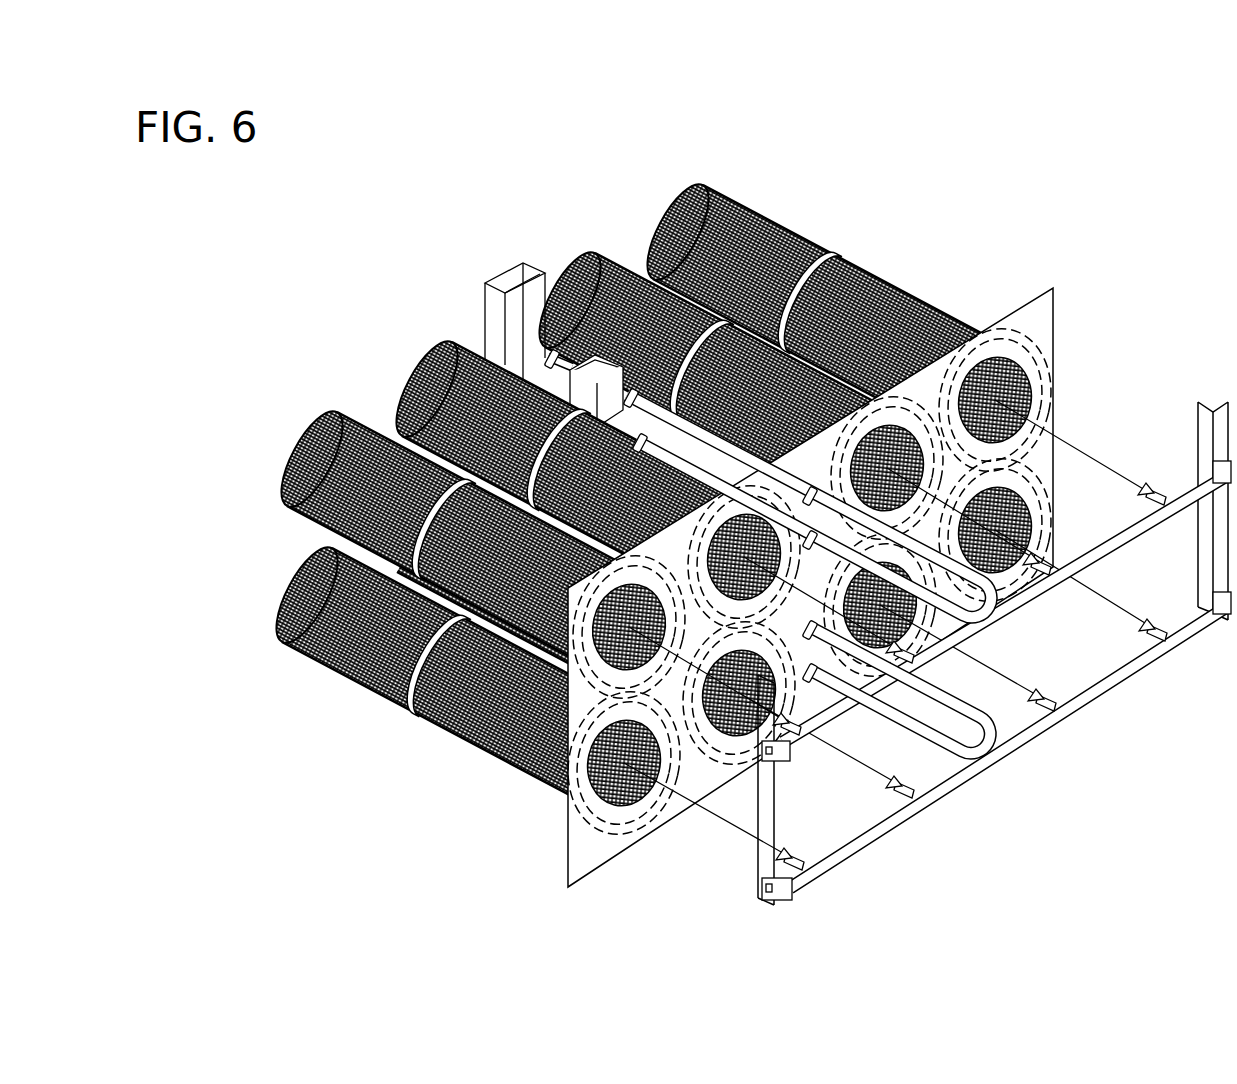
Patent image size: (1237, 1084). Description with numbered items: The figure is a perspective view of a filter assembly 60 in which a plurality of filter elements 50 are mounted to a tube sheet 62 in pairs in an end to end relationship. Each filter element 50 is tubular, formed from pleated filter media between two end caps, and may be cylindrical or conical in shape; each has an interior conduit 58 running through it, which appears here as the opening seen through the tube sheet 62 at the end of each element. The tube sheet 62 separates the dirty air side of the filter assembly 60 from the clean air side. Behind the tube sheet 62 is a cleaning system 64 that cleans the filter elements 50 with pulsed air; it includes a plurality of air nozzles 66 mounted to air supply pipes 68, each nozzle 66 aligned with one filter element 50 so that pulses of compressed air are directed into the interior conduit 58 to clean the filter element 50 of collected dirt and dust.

The filter element 50 is at (772, 212).
The interior conduit 58 is at (1010, 392).
The filter assembly 60 is at (1110, 212).
The tube sheet 62 is at (1055, 318).
The cleaning system 64 is at (927, 646).
The air nozzle 66 is at (1157, 485).
The air supply pipe 68 is at (1133, 671).